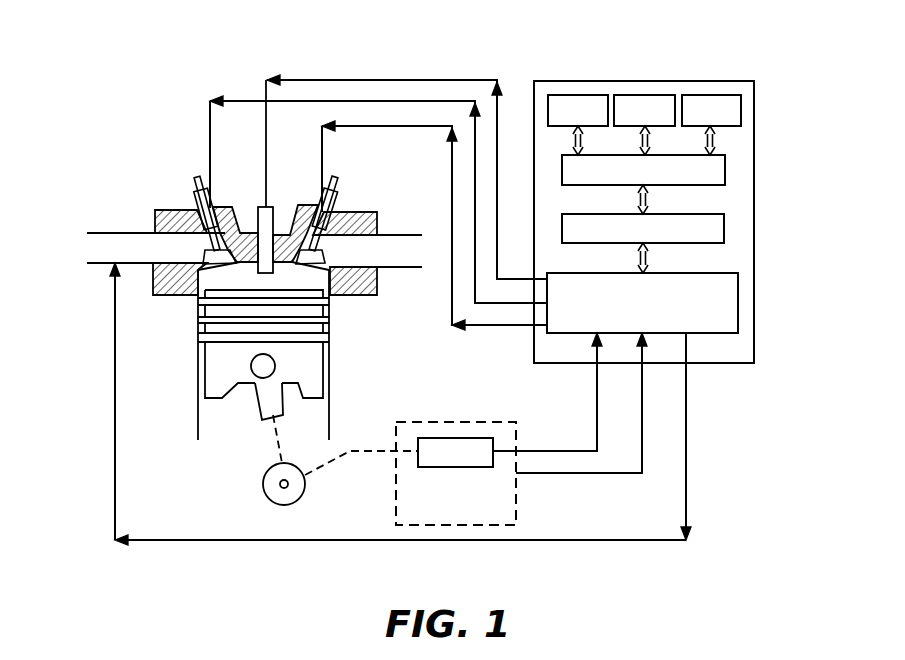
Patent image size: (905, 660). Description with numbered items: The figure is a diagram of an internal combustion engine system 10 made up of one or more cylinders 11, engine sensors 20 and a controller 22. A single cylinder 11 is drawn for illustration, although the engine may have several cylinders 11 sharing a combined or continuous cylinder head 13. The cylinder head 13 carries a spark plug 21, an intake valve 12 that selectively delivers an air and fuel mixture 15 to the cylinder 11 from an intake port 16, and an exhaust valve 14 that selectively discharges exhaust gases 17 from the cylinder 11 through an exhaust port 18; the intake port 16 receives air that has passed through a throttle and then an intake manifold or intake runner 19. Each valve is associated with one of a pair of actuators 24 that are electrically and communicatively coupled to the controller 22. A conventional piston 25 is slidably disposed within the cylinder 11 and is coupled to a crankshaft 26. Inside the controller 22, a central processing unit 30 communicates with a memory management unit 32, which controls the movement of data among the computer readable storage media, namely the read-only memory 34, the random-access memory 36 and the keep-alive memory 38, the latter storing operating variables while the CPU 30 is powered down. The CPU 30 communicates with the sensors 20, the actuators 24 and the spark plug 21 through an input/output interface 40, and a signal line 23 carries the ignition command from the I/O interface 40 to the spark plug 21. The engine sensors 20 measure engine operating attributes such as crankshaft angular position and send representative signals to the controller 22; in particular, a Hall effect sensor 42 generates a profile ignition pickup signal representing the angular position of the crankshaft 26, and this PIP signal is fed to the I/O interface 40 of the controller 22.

The internal combustion engine system 10 is at (196, 60).
The cylinder 11 is at (187, 322).
The intake valve 12 is at (196, 177).
The cylinder head 13 is at (231, 206).
The exhaust valve 14 is at (335, 177).
The air and fuel mixture 15 is at (183, 249).
The intake port 16 is at (127, 265).
The exhaust gases 17 is at (106, 244).
The exhaust port 18 is at (387, 263).
The intake manifold 19 is at (125, 242).
The engine sensors 20 is at (465, 422).
The spark plug 21 is at (259, 205).
The controller 22 is at (741, 81).
The ignition signal line 23 is at (340, 79).
The actuator 24 is at (191, 190).
The piston 25 is at (215, 400).
The crankshaft 26 is at (263, 476).
The central processing unit 30 is at (725, 230).
The memory management unit 32 is at (725, 170).
The read-only memory 34 is at (712, 94).
The random-access memory 36 is at (645, 94).
The keep-alive memory 38 is at (580, 94).
The input/output interface 40 is at (738, 290).
The Hall effect sensor 42 is at (448, 437).